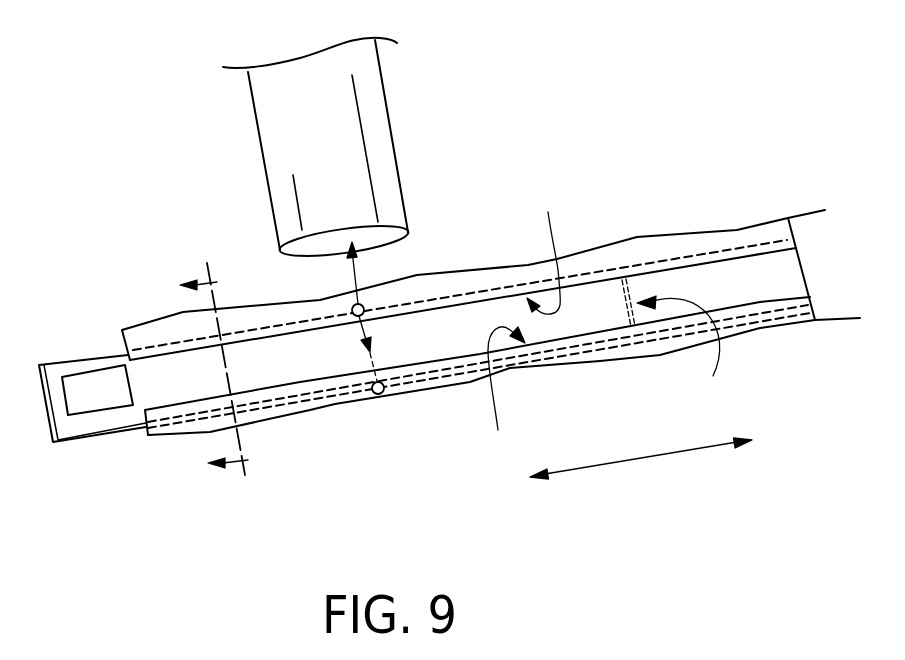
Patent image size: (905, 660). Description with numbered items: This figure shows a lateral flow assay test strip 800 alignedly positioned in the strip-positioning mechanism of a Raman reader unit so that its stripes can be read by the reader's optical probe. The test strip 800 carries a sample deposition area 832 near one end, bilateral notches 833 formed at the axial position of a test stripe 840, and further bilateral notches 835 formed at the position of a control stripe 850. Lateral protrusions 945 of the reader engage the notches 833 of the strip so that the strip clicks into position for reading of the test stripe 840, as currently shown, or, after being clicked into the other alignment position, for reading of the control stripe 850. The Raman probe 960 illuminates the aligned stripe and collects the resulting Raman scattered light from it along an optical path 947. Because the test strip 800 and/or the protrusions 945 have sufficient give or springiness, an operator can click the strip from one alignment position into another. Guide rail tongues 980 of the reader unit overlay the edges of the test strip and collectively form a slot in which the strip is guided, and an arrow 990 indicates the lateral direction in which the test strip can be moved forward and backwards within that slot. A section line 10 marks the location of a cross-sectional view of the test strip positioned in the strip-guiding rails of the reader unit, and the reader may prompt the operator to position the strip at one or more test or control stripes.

The section line 10 is at (200, 371).
The lateral flow assay test strip 800 is at (95, 357).
The sample deposition area 832 is at (82, 404).
The bilateral notches 833 is at (344, 318).
The bilateral notches 835 is at (623, 277).
The test stripe 840 is at (351, 368).
The control stripe 850 is at (688, 349).
The lateral protrusions 945 is at (352, 305).
The optical path 947 is at (357, 278).
The Raman probe 960 is at (282, 139).
The guide rail tongues 980 is at (523, 322).
The arrow 990 is at (631, 462).